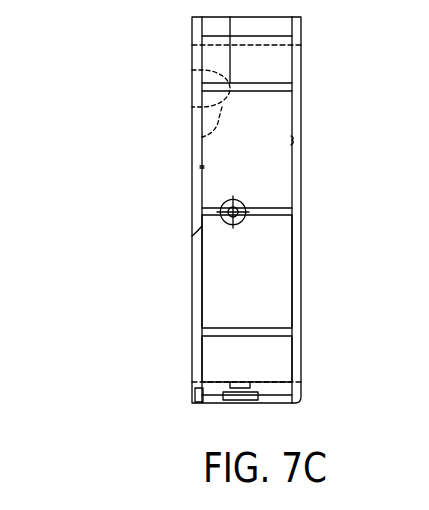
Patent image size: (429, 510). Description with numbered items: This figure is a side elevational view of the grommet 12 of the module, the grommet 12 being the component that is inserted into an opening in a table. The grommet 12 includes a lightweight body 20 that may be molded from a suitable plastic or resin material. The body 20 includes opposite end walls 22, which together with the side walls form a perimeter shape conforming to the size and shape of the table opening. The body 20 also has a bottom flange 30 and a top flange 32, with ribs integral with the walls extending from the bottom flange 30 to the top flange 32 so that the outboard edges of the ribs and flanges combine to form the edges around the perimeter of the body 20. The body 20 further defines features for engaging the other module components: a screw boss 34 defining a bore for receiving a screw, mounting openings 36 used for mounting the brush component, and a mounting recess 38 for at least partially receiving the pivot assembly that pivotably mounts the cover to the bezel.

The grommet 12 is at (138, 66).
The body 20 is at (301, 353).
The end wall 22 is at (266, 281).
The bottom flange 30 is at (300, 375).
The top flange 32 is at (198, 354).
The screw boss 34 is at (241, 201).
The mounting opening 36 is at (232, 403).
The mounting recess 38 is at (202, 137).